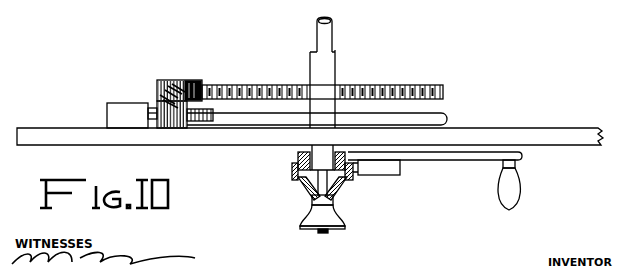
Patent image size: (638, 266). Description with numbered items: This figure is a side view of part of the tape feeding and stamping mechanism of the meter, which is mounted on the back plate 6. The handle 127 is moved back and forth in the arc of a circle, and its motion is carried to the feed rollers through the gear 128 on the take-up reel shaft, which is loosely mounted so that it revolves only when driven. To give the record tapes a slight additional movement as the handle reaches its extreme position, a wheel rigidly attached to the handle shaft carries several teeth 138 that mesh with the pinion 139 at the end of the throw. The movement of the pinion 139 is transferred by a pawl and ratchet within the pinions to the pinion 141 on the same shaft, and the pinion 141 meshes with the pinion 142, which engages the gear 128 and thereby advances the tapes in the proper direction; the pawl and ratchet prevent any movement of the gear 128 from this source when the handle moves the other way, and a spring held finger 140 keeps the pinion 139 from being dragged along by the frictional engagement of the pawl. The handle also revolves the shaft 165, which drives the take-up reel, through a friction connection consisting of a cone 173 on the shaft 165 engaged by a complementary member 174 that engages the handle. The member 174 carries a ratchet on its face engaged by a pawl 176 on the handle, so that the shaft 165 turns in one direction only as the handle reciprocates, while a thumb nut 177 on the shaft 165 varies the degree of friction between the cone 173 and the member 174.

The back plate 6 is at (134, 138).
The handle 127 is at (472, 160).
The gear 128 is at (236, 87).
The teeth 138 is at (204, 111).
The pinion 139 is at (186, 122).
The spring held finger 140 is at (152, 106).
The pinion 141 is at (168, 80).
The pinion 142 is at (200, 83).
The shaft 165 is at (325, 30).
The cone 173 is at (307, 188).
The complementary member 174 is at (337, 185).
The pawl 176 is at (353, 172).
The thumb nut 177 is at (313, 223).